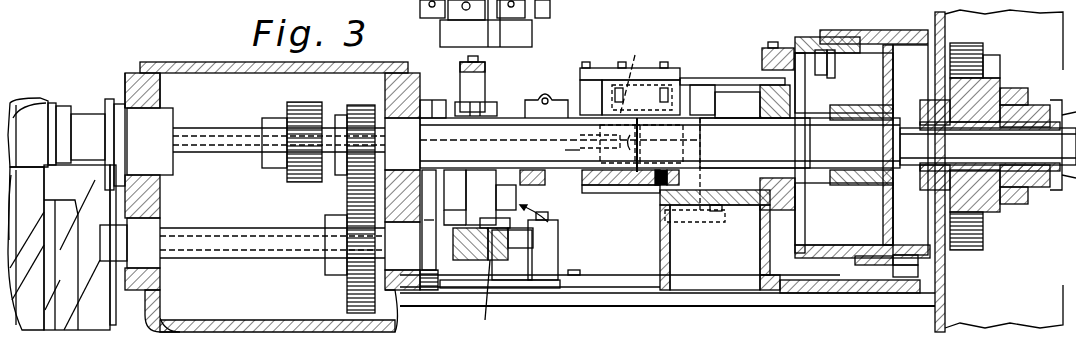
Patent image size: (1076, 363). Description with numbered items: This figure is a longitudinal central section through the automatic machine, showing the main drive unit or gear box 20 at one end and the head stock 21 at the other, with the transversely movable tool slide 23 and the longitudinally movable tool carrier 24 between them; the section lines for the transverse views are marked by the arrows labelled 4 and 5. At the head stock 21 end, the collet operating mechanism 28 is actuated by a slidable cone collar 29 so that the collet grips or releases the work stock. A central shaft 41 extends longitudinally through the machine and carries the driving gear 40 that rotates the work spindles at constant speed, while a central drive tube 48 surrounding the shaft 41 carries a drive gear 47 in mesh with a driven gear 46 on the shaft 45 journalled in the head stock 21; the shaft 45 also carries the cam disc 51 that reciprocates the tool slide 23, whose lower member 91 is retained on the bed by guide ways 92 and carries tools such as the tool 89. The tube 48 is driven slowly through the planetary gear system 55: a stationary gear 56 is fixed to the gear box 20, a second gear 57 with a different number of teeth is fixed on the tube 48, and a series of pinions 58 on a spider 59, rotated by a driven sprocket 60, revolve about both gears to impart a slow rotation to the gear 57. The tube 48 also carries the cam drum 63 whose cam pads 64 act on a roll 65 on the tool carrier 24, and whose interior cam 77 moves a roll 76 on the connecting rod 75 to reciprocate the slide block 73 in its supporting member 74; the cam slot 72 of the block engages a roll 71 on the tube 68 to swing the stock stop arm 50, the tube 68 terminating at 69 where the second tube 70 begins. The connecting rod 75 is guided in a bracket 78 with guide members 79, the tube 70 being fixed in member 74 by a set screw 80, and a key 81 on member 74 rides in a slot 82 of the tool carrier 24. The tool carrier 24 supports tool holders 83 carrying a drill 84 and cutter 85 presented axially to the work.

The section line 4- 4 is at (565, 0).
The section line 5- 5 is at (762, 12).
The gear box 20 is at (1028, 10).
The head stock 21 is at (155, 52).
The tool slide 23 is at (516, 242).
The tool carrier 24 is at (648, 238).
The operating mechanism 28 is at (30, 95).
The collar 29 is at (60, 110).
The driving gear 40 is at (286, 172).
The central shaft 41 is at (232, 133).
The shaft 45 is at (218, 258).
The driven gear 46 is at (346, 200).
The drive gear 47 is at (358, 112).
The central tube 48 is at (425, 105).
The stock stop arm 50 is at (530, 102).
The cam disc 51 is at (430, 292).
The planetary gear system 55 is at (1008, 76).
The stationary gear 56 is at (948, 90).
The second gear 57 is at (995, 215).
The pinions 58 is at (970, 46).
The spider 59 is at (1020, 205).
The driven sprocket 60 is at (1022, 90).
The cam drum 63 is at (832, 37).
The cam pads 64 is at (876, 32).
The roll 65 is at (905, 256).
The tube 68 is at (505, 184).
The termination of tube 68 69 is at (640, 141).
The second tube 70 is at (742, 120).
The roll 71 is at (638, 79).
The cam slot 72 is at (700, 128).
The slide block 73 is at (698, 100).
The supporting member 74 is at (582, 98).
The connecting rod 75 is at (720, 80).
The roll 76 is at (830, 55).
The cam 77 is at (795, 50).
The bracket 78 is at (769, 101).
The guide members 79 is at (838, 70).
The set screw 80 is at (662, 186).
The key 81 is at (595, 193).
The slot 82 is at (710, 192).
The tool holders 83 is at (720, 143).
The drill 84 is at (580, 136).
The cutter 85 is at (568, 158).
The tool 89 is at (470, 104).
The lower member 91 is at (496, 295).
The guide ways 92 is at (550, 262).